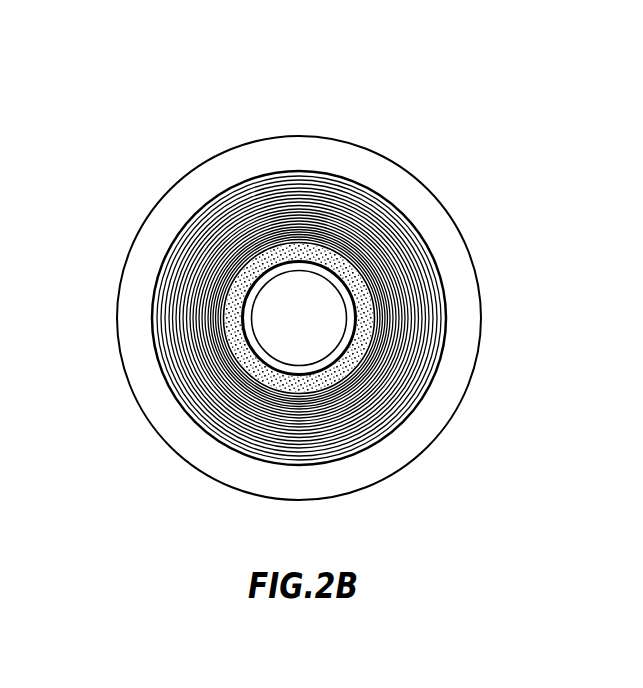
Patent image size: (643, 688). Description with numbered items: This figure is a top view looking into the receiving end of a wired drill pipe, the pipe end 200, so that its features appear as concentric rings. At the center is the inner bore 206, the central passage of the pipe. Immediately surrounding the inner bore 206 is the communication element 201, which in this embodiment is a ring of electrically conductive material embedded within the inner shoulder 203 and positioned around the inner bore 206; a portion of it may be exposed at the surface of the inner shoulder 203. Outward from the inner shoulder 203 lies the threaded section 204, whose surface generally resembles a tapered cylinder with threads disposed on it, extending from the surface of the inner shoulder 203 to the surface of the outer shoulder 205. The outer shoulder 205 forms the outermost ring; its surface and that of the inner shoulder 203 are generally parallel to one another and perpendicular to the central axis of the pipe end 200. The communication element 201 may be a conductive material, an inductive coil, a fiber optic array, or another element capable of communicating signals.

The pipe end 200 is at (334, 281).
The communication element 201 is at (356, 304).
The inner shoulder 203 is at (238, 363).
The threaded section 204 is at (305, 204).
The outer shoulder 205 is at (453, 270).
The inner bore 206 is at (343, 328).